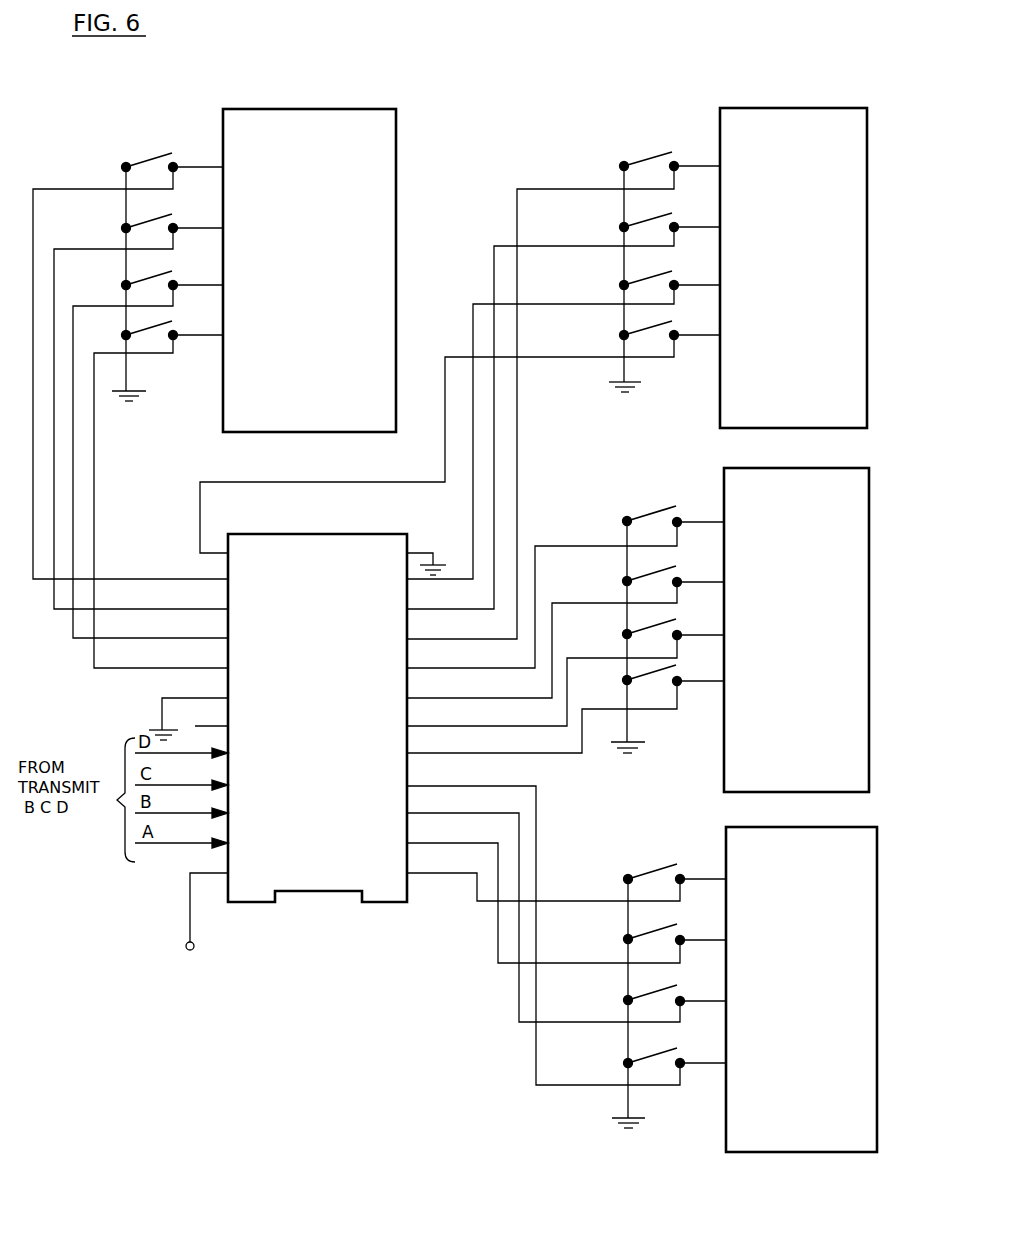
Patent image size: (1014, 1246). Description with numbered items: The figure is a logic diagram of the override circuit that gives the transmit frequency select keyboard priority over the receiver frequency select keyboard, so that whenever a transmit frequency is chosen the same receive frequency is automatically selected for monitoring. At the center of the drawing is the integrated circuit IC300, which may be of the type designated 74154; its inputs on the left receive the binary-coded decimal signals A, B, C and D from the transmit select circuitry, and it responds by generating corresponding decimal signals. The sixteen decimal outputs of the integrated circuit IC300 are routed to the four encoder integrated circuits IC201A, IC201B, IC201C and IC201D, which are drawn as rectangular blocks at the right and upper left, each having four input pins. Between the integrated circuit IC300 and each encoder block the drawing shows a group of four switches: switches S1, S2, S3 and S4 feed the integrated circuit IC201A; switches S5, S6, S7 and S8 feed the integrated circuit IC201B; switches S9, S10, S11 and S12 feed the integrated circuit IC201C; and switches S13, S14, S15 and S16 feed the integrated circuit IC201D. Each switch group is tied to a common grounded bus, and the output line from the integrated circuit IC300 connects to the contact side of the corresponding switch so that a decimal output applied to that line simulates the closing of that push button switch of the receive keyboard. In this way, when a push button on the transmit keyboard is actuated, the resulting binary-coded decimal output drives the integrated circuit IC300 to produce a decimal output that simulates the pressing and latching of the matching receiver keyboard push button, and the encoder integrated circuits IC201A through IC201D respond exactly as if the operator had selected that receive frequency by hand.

The integrated circuit IC201A is at (787, 1130).
The integrated circuit IC201B is at (832, 525).
The integrated circuit IC201C is at (768, 127).
The integrated circuit IC201D is at (322, 127).
The integrated circuit IC300 is at (342, 875).
The switch S1 is at (620, 879).
The switch S2 is at (622, 939).
The switch S3 is at (624, 1000).
The switch S4 is at (626, 1062).
The switch S5 is at (619, 521).
The switch S6 is at (619, 581).
The switch S7 is at (621, 633).
The switch S8 is at (623, 680).
The switch S9 is at (621, 165).
The switch S10 is at (621, 226).
The switch S11 is at (621, 284).
The switch S12 is at (621, 334).
The switch S13 is at (123, 166).
The switch S14 is at (123, 227).
The switch S15 is at (123, 283).
The switch S16 is at (123, 333).